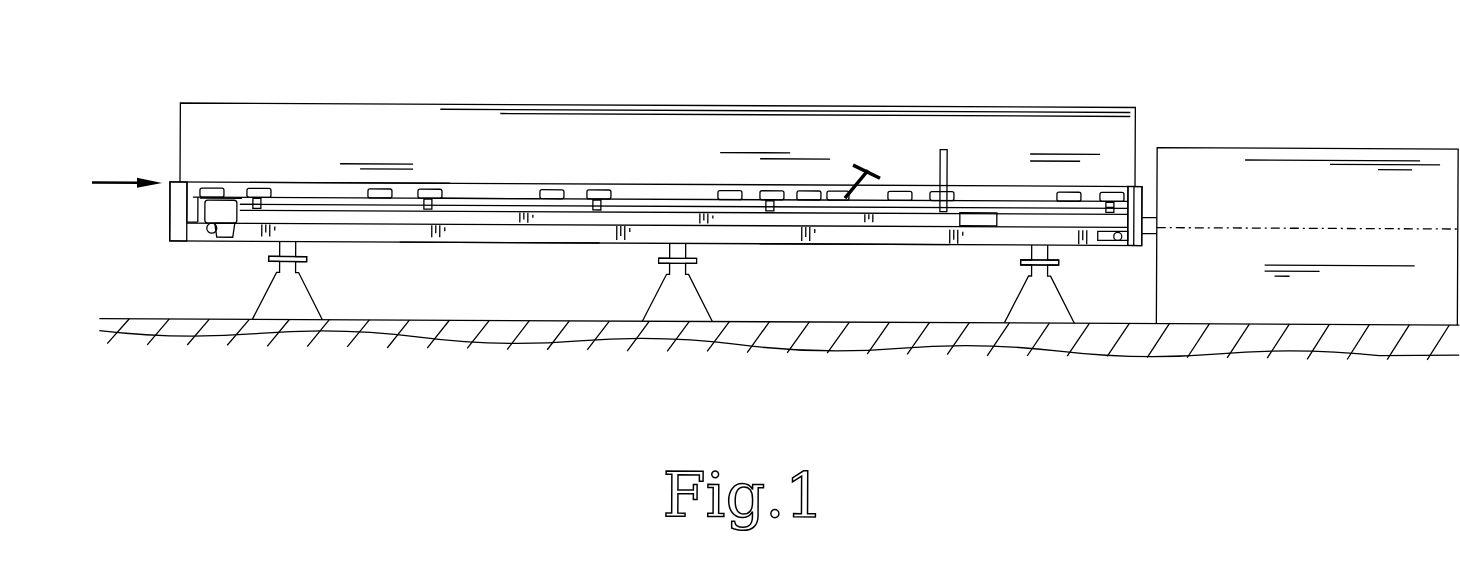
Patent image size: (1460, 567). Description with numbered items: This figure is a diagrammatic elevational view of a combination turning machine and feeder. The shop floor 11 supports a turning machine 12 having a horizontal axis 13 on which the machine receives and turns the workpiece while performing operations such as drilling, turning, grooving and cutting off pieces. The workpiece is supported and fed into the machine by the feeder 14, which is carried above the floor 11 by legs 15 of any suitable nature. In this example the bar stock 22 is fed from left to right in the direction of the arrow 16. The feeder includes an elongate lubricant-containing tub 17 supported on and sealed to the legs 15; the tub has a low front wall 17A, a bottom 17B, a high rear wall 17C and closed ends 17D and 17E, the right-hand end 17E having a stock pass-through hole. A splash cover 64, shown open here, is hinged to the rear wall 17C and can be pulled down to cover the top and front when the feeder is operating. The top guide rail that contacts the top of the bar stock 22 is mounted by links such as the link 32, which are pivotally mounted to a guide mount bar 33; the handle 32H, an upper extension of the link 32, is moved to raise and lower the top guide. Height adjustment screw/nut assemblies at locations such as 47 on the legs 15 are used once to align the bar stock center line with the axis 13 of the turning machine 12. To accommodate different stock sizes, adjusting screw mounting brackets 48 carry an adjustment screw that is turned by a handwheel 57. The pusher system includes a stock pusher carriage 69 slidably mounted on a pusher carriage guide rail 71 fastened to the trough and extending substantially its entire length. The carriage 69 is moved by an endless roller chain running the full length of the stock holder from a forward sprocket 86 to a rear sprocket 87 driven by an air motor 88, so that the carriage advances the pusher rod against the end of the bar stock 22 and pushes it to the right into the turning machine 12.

The shop floor 11 is at (193, 317).
The turning machine 12 is at (1300, 143).
The horizontal axis 13 is at (1308, 223).
The feeder 14 is at (1050, 98).
The legs 15 is at (330, 291).
The arrow 16 is at (136, 167).
The lubricant-containing tub 17 is at (579, 245).
The low front wall 17A is at (488, 232).
The bottom 17B is at (845, 242).
The high rear wall 17C is at (322, 182).
The closed end 17D is at (170, 229).
The closed end 17E is at (1147, 243).
The bar stock 22 is at (1150, 213).
The link 32 is at (270, 186).
The handle 32H is at (947, 182).
The guide mount bar 33 is at (487, 196).
The height adjustment screw/nut assemblies 47 is at (307, 259).
The adjusting screw mounting brackets 48 is at (836, 188).
The handwheel 57 is at (870, 165).
The splash cover 64 is at (180, 133).
The stock pusher carriage 69 is at (980, 222).
The pusher carriage guide rail 71 is at (254, 212).
The forward sprocket 86 is at (1116, 237).
The rear sprocket 87 is at (207, 226).
The air motor 88 is at (210, 234).